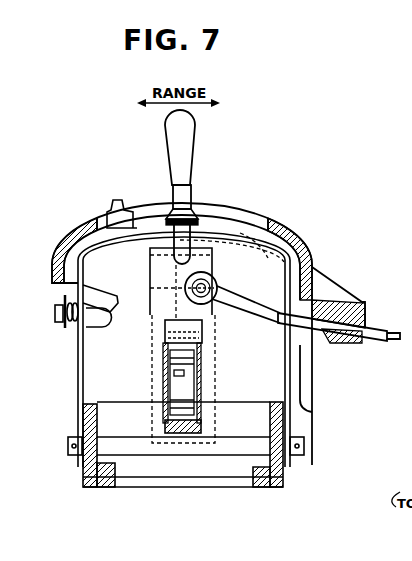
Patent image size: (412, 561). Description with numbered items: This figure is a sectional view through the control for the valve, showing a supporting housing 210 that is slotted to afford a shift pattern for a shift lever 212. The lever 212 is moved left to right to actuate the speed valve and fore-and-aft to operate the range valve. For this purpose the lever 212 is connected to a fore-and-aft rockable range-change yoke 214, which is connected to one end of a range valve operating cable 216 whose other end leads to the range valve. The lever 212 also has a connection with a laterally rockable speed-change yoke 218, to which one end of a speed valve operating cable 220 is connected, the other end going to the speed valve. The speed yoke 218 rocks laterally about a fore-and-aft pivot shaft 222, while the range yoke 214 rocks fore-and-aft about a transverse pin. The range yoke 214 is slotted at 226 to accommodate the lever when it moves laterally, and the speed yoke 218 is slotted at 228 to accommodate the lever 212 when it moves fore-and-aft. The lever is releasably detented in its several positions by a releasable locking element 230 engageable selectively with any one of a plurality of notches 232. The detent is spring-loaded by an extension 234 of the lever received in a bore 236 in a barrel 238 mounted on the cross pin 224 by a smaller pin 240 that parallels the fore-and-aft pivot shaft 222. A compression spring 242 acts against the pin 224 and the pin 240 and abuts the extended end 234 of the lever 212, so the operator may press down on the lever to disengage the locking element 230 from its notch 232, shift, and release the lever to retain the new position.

The supporting housing 210 is at (305, 247).
The shift lever 212 is at (196, 134).
The range-change yoke 214 is at (211, 279).
The range valve operating cable 216 is at (398, 340).
The speed-change yoke 218 is at (78, 362).
The speed valve operating cable 220 is at (66, 326).
The fore-and-aft pivot shaft 222 is at (67, 452).
The cross pin 224 is at (185, 433).
The slot 226 is at (173, 261).
The slot 228 is at (250, 240).
The releasable locking element 230 is at (193, 218).
The notch 232 is at (134, 212).
The lever extension 234 is at (197, 362).
The bore 236 is at (200, 388).
The barrel 238 is at (163, 378).
The smaller pin 240 is at (200, 425).
The compression spring 242 is at (164, 410).